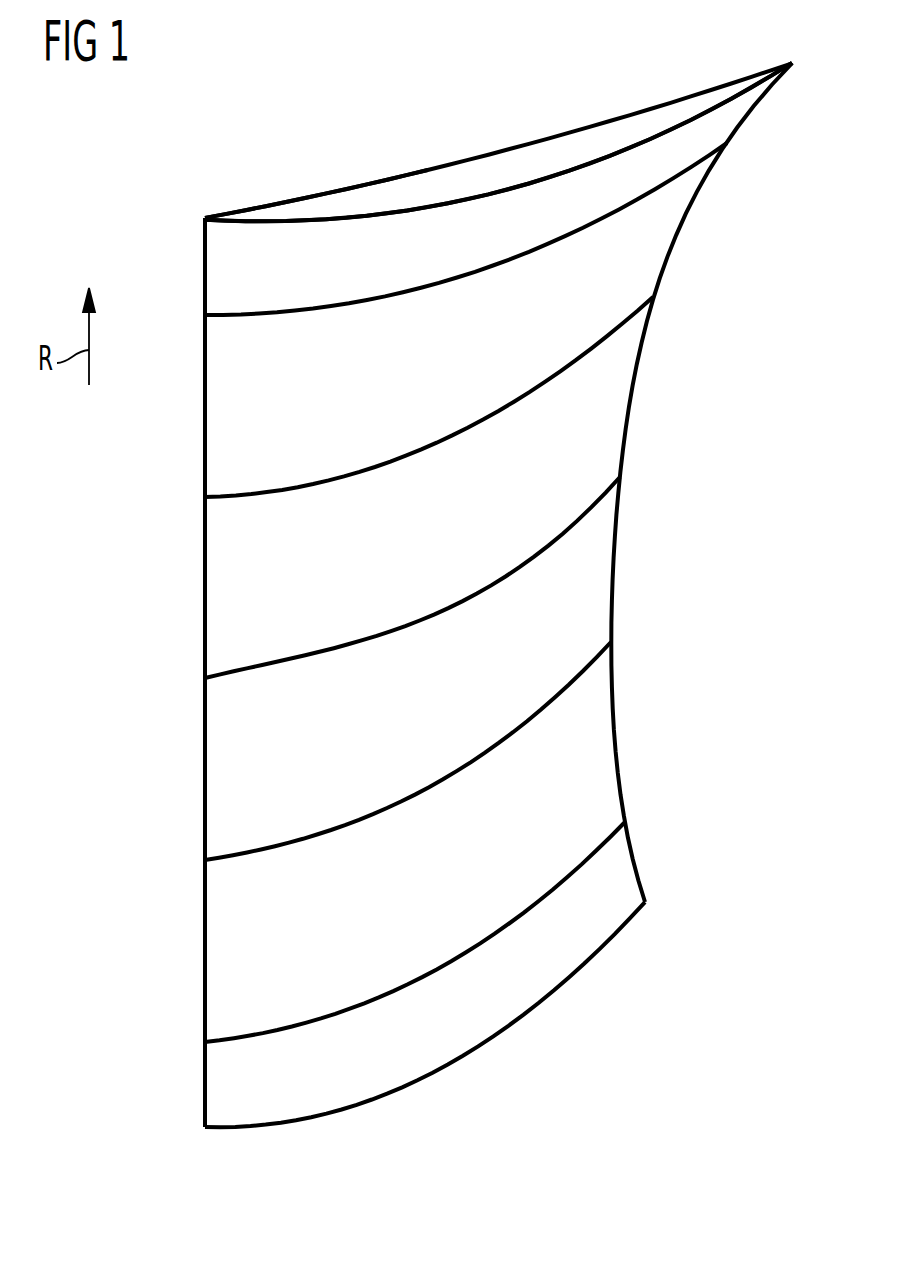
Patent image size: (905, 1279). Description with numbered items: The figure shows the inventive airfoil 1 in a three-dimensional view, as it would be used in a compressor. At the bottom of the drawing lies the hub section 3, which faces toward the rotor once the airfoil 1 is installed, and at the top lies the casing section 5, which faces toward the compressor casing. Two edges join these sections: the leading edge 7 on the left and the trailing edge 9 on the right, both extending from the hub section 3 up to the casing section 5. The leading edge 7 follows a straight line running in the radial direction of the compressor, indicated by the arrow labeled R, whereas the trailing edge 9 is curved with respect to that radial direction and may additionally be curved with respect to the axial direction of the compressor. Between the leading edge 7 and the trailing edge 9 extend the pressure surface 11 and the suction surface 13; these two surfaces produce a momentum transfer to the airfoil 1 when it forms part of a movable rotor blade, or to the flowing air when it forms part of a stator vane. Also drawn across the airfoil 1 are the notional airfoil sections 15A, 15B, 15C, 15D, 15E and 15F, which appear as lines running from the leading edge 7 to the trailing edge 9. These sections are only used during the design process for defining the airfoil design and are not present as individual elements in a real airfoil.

The airfoil 1 is at (118, 188).
The hub section 3 is at (477, 1050).
The casing section 5 is at (490, 170).
The leading edge 7 is at (205, 783).
The trailing edge 9 is at (615, 557).
The pressure surface 11 is at (380, 209).
The suction surface 13 is at (578, 195).
The notional airfoil section 15A is at (205, 1042).
The notional airfoil section 15B is at (205, 860).
The notional airfoil section 15C is at (205, 678).
The notional airfoil section 15D is at (205, 497).
The notional airfoil section 15E is at (205, 315).
The notional airfoil section 15F is at (216, 263).